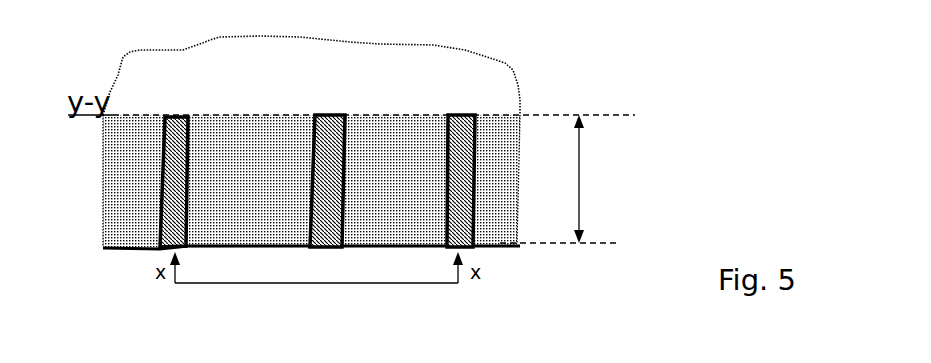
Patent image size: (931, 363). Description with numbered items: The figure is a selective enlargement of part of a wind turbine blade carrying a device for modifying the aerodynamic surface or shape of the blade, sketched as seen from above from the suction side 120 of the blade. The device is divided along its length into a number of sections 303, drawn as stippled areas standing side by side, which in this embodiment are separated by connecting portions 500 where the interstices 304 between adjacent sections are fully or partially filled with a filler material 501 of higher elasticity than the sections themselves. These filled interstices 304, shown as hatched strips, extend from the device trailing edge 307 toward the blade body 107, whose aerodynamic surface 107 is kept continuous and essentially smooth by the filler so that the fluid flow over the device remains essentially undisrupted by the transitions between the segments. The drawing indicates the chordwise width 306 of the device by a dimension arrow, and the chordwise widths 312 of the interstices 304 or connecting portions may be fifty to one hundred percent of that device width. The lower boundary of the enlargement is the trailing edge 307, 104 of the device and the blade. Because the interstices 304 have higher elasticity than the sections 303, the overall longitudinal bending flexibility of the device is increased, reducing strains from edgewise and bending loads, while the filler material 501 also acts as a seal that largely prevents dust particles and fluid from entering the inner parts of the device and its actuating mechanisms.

The blade body 107 is at (457, 87).
The connecting portions 500 is at (359, 187).
The filler material 501 is at (359, 187).
The chordwise width 306 is at (588, 179).
The chordwise widths of the interstices 312 is at (588, 179).
The suction side 120 is at (503, 228).
The device trailing edge 307 is at (357, 279).
The trailing edge 104 is at (482, 247).
The interstices 304 is at (160, 212).
The sections 303 is at (361, 222).